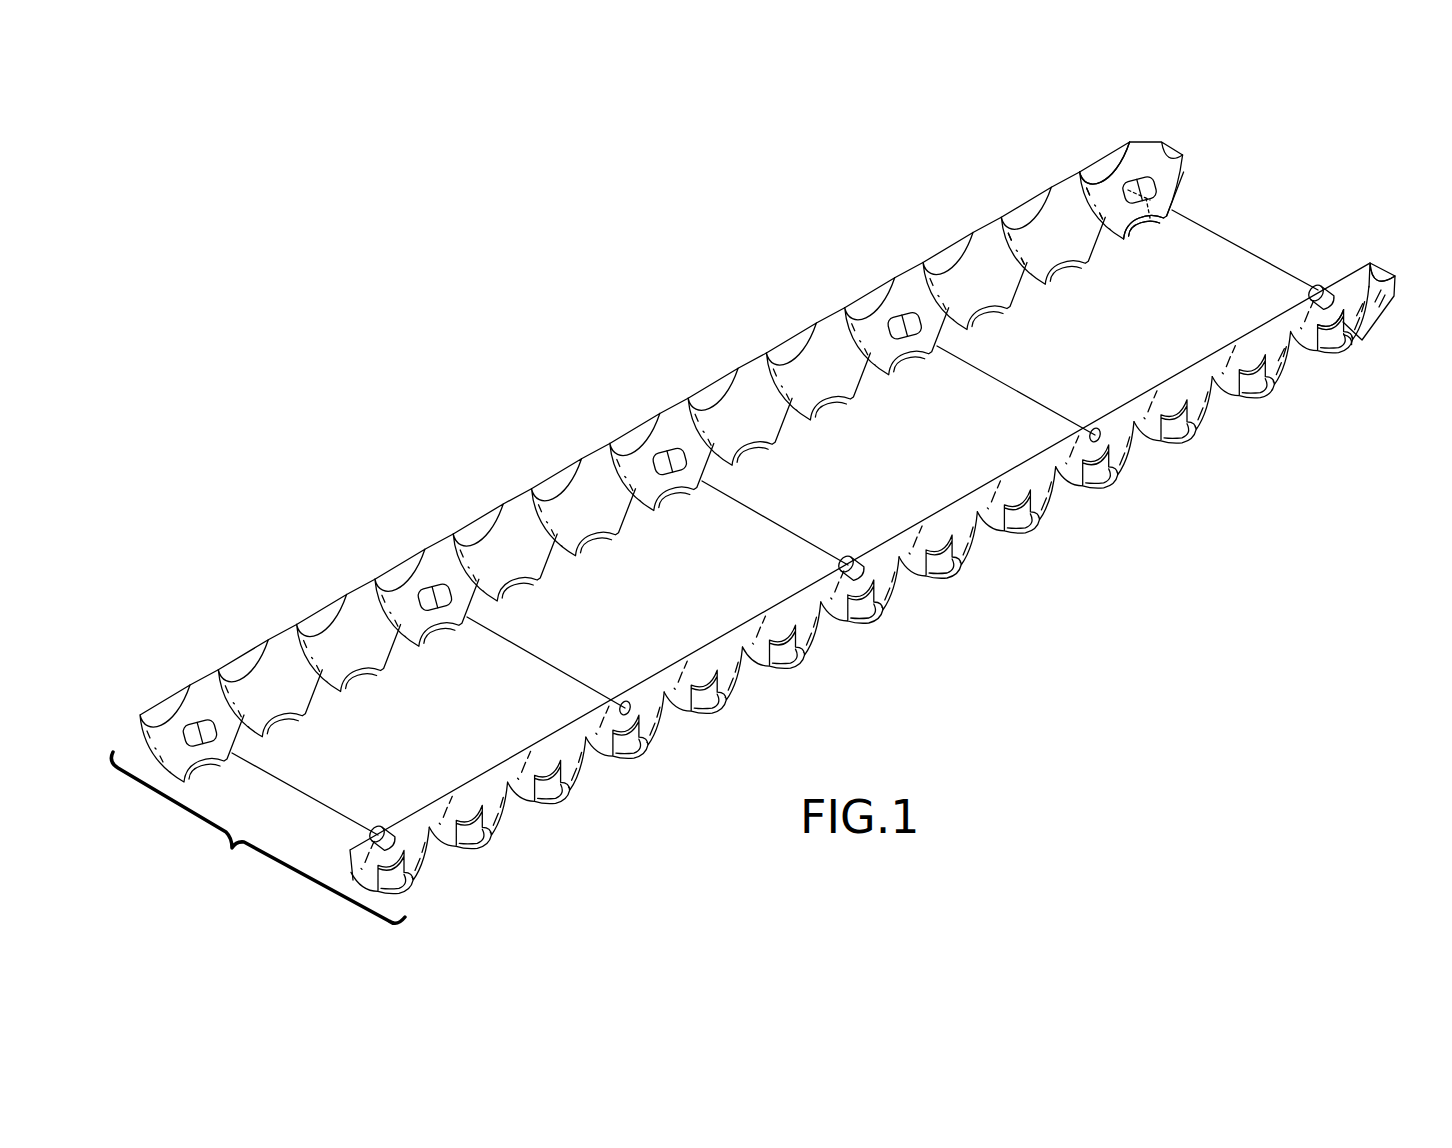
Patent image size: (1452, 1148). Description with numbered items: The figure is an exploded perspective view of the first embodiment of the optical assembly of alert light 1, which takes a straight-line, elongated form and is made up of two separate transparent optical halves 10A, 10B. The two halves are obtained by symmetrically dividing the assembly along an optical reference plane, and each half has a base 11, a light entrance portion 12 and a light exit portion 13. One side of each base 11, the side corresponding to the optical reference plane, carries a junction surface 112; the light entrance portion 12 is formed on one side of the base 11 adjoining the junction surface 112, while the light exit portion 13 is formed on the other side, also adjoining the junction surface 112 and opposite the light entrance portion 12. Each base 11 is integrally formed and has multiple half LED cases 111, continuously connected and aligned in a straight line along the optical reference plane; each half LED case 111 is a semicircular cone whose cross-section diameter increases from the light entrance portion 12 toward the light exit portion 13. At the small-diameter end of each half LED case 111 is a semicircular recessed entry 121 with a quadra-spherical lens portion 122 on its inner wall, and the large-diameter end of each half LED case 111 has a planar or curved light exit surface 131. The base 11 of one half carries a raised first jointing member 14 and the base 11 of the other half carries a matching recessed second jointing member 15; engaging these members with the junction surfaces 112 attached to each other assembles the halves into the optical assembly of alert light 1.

The optical assembly of alert light 1 is at (781, 500).
The optical half 10A is at (1375, 252).
The optical half 10B is at (1170, 158).
The base 11 is at (1146, 158).
The light entrance portion 12 is at (1138, 224).
The light exit portion 13 is at (1093, 162).
The first jointing member 14 is at (1320, 288).
The second jointing member 15 is at (1150, 188).
The half LED case 111 is at (1152, 168).
The junction surface 112 is at (1252, 352).
The recessed entry 121 is at (1325, 353).
The quadra-spherical lens portion 122 is at (1322, 318).
The light exit surface 131 is at (1147, 137).